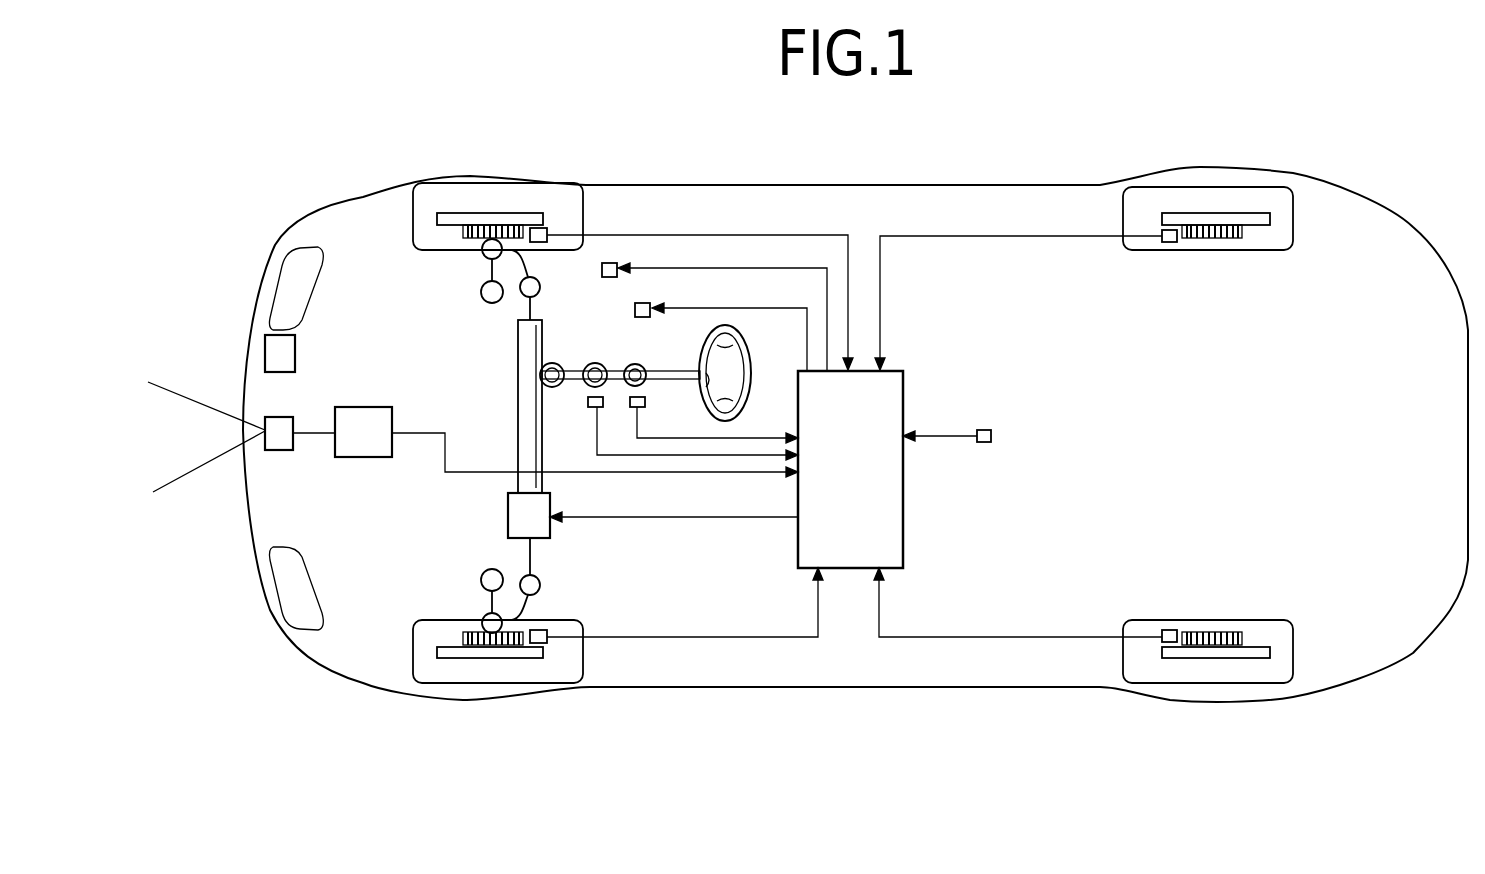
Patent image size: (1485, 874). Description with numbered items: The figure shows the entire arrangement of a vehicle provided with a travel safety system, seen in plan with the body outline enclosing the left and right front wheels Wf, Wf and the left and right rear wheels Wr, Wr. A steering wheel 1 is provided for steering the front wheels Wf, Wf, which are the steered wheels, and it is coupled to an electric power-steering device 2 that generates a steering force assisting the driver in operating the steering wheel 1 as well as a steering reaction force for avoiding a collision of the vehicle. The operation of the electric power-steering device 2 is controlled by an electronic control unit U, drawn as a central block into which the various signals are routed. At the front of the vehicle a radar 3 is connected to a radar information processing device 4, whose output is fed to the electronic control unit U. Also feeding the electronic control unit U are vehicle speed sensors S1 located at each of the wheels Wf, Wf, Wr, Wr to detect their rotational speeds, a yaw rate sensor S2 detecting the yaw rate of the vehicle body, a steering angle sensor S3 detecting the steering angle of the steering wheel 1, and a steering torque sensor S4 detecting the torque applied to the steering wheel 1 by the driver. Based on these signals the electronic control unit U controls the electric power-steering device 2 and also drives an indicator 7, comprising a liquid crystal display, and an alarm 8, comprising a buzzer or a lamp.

The steering wheel 1 is at (740, 366).
The electric power-steering device 2 is at (519, 531).
The radar 3 is at (281, 416).
The radar information processing device 4 is at (353, 448).
The indicator 7 is at (600, 277).
The alarm 8 is at (640, 312).
The vehicle speed sensors S1 is at (547, 231).
The yaw rate sensor S2 is at (992, 436).
The steering angle sensor S3 is at (647, 405).
The steering torque sensor S4 is at (588, 404).
The electronic control unit U is at (836, 488).
The front wheels Wf is at (468, 760).
The rear wheels Wr is at (1253, 187).